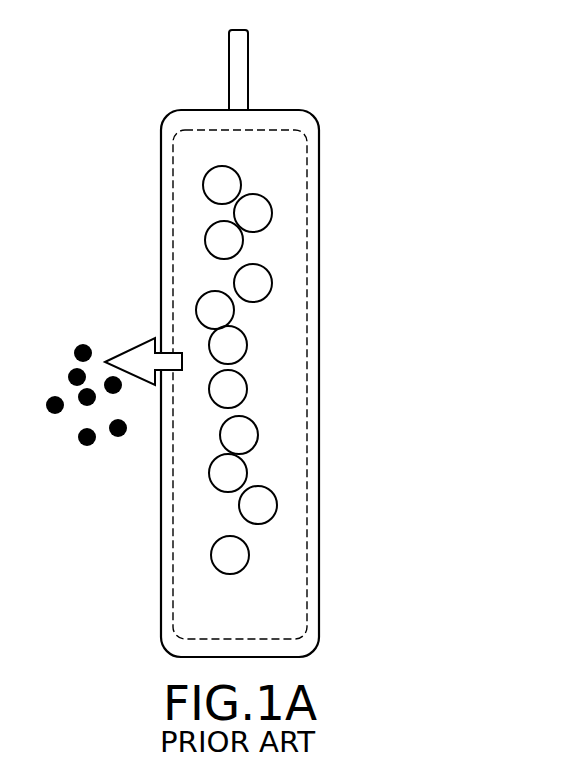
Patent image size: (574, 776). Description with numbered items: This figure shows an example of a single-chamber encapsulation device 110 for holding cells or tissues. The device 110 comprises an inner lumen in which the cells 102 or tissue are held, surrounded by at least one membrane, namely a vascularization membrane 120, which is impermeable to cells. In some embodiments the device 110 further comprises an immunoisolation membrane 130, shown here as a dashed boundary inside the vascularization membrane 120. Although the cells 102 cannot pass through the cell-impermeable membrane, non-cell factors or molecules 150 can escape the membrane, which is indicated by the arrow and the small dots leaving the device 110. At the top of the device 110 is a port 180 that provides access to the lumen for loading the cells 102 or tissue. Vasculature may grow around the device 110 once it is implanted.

The encapsulation device 110 is at (269, 341).
The vascularization membrane 120 is at (317, 258).
The immunoisolation membrane 130 is at (306, 437).
The cells 102 is at (208, 474).
The non-cell factors or molecules 150 is at (78, 343).
The port 180 is at (248, 73).